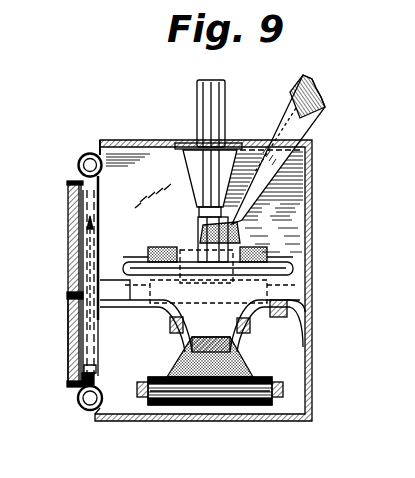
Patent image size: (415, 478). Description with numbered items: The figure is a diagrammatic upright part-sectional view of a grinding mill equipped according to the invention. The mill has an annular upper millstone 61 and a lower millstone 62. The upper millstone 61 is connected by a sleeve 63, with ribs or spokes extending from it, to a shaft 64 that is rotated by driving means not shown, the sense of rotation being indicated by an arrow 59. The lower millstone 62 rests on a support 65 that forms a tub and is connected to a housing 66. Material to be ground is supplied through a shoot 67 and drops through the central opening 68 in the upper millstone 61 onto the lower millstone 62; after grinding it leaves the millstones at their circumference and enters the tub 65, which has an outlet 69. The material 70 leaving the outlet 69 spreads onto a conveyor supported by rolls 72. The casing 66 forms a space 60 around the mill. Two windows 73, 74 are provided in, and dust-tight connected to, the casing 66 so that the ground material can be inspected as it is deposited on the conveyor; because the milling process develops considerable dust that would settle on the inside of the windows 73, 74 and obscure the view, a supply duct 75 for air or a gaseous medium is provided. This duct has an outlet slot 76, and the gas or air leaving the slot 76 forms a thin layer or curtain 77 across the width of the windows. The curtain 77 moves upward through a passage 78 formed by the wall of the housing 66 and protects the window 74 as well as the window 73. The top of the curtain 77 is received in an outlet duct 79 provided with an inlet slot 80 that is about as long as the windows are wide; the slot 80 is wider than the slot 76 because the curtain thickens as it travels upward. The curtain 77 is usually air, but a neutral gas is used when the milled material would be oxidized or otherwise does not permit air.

The arrow 59 is at (197, 214).
The space 60 is at (295, 208).
The upper millstone 61 is at (268, 250).
The lower millstone 62 is at (176, 305).
The sleeve 63 is at (192, 242).
The shaft 64 is at (205, 104).
The support 65 is at (284, 312).
The housing 66 is at (150, 140).
The shoot 67 is at (318, 105).
The central opening 68 is at (236, 270).
The outlet 69 is at (232, 345).
The material 70 is at (195, 379).
The rolls 72 is at (208, 386).
The window 73 is at (72, 218).
The window 74 is at (70, 352).
The supply duct 75 is at (79, 403).
The outlet slot 76 is at (86, 372).
The curtain 77 is at (85, 248).
The passage 78 is at (101, 316).
The outlet duct 79 is at (80, 160).
The inlet slot 80 is at (94, 186).